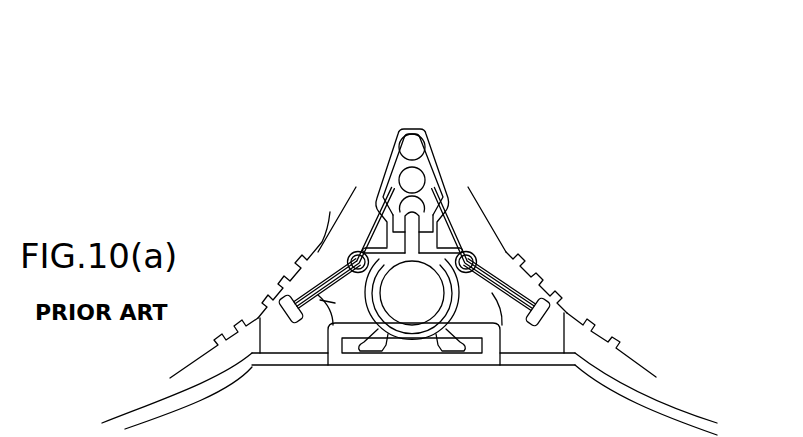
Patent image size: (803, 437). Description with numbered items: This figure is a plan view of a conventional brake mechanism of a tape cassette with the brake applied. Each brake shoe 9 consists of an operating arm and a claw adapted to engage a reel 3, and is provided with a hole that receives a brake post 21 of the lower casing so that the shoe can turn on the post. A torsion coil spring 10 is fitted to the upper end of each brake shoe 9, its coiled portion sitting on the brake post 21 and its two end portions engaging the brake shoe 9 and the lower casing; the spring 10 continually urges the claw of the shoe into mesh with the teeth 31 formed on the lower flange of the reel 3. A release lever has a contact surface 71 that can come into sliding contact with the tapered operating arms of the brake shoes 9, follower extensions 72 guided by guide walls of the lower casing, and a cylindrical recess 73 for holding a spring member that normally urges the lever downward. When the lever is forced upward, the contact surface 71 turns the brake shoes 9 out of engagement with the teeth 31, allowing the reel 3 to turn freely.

The reel 3 is at (522, 228).
The brake post 21 is at (347, 256).
The torsion coil spring 10 is at (322, 258).
The teeth 31 is at (576, 357).
The contact surface 71 is at (335, 303).
The follower extension 72 is at (358, 345).
The cylindrical recess 73 is at (416, 298).
The brake shoe 9 is at (502, 327).